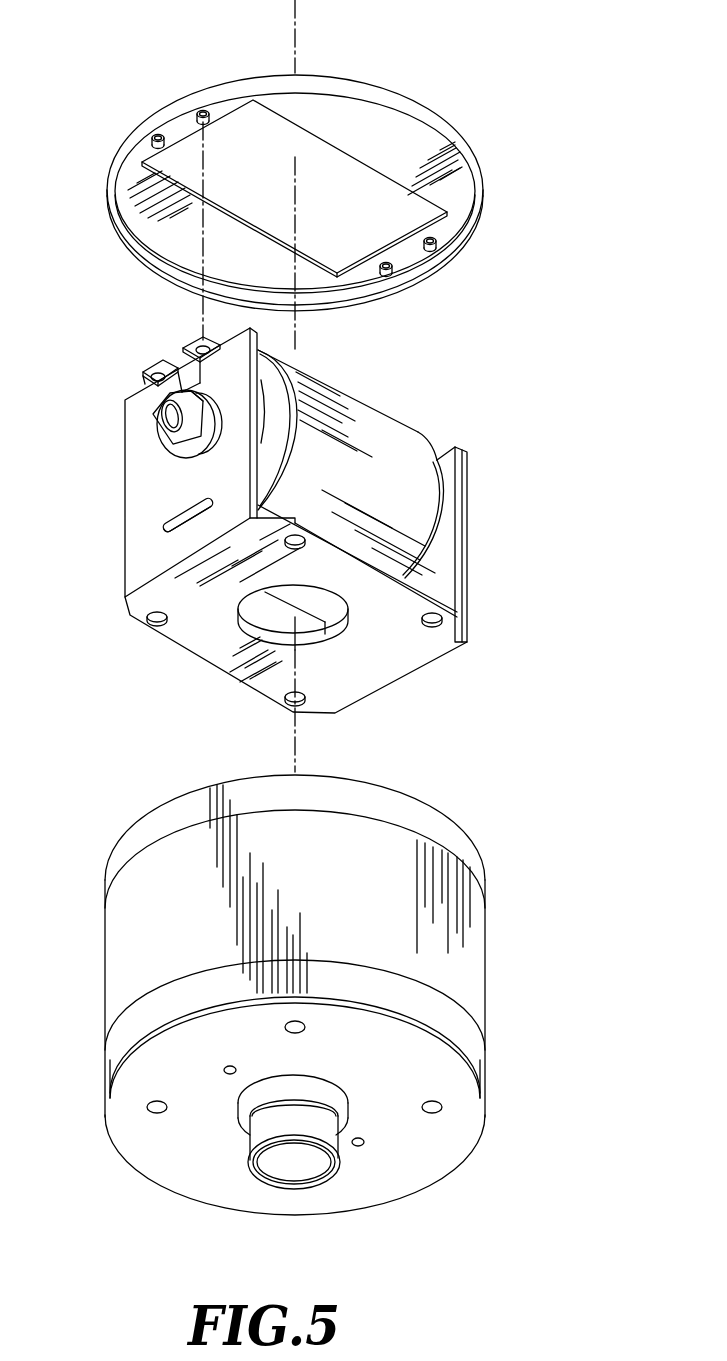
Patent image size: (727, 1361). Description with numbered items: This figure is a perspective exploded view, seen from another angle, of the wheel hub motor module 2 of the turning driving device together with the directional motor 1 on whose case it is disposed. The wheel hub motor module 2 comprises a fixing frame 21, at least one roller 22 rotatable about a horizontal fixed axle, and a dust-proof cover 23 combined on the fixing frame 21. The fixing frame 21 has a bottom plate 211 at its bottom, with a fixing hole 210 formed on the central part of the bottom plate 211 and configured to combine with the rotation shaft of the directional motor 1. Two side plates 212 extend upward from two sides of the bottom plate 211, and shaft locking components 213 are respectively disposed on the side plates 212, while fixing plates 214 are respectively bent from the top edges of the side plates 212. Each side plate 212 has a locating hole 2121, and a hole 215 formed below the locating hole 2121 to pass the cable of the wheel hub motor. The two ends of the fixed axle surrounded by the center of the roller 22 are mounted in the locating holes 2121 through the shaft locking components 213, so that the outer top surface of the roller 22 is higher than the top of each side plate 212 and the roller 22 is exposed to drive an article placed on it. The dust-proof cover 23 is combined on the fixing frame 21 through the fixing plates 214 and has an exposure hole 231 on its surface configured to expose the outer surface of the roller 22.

The directional motor 1 is at (140, 953).
The wheel hub motor module 2 is at (468, 287).
The fixing frame 21 is at (492, 522).
The roller 22 is at (372, 468).
The dust-proof cover 23 is at (425, 118).
The fixing hole 210 is at (316, 648).
The bottom plate 211 is at (221, 632).
The side plate 212 is at (145, 502).
The shaft locking component 213 is at (165, 432).
The fixing plate 214 is at (146, 377).
The hole 215 is at (142, 550).
The exposure hole 231 is at (403, 240).
The locating hole 2121 is at (180, 362).